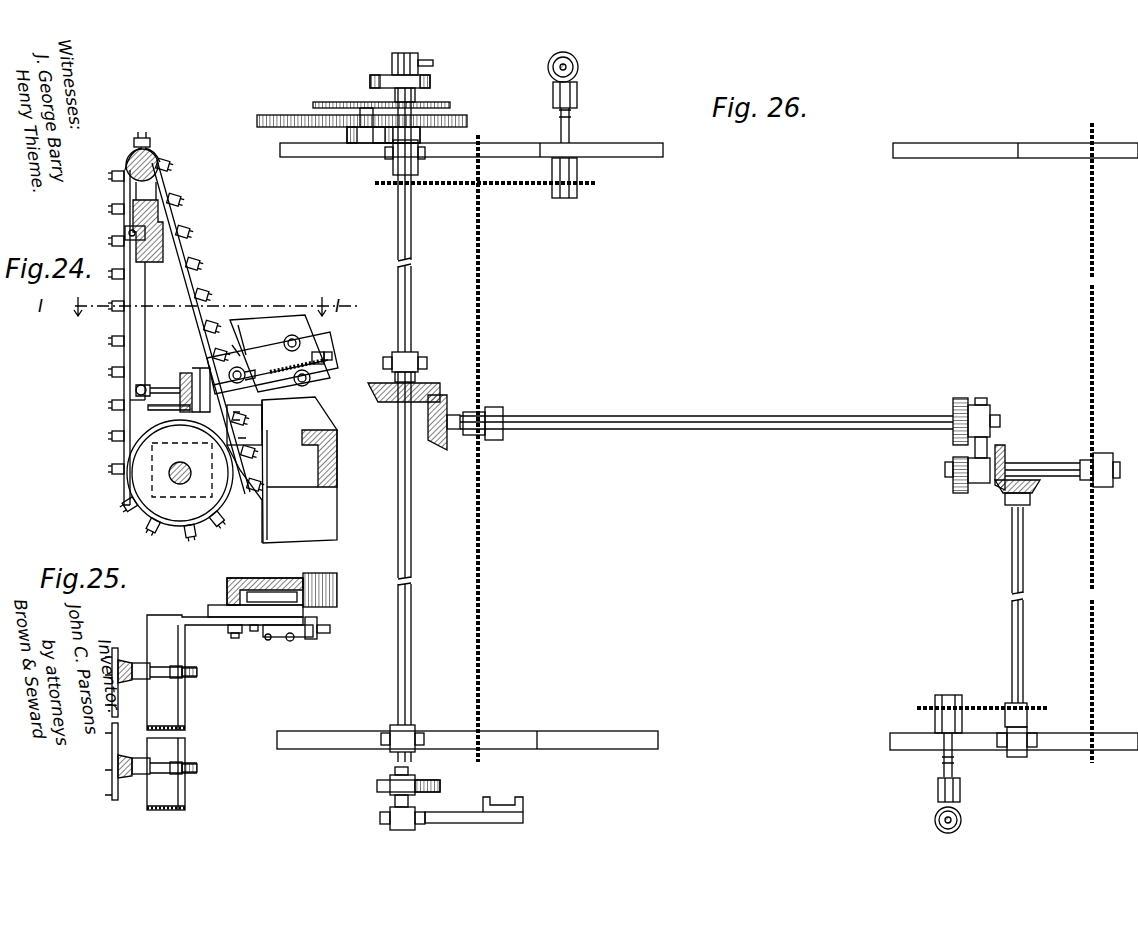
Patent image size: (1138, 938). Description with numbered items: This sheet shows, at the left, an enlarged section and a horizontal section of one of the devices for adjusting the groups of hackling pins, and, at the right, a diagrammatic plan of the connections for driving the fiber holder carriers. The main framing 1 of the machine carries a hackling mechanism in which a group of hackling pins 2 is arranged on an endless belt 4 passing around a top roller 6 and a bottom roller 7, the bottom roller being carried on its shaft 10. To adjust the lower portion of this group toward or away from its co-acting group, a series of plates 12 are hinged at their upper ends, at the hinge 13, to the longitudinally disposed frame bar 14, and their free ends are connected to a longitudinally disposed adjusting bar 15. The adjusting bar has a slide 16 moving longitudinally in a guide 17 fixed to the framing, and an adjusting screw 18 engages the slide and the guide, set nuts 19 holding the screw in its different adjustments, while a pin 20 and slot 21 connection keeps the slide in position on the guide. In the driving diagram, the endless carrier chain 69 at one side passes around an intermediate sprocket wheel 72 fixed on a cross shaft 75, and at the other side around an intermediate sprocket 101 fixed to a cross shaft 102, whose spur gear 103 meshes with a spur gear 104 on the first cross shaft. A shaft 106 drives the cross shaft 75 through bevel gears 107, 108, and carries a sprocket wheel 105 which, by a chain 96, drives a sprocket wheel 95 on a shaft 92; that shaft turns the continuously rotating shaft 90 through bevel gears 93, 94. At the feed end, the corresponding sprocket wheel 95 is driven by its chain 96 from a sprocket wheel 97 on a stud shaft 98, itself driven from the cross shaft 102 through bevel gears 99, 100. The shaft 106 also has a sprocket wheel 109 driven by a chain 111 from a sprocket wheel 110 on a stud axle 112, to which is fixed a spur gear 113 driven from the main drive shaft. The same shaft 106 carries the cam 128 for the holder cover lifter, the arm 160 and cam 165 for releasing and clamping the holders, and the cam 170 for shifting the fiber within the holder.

In FIG. 24, the main framing 1 is at (320, 512).
In FIG. 25, the main framing 1 is at (252, 580).
In FIG. 26, the main framing 1 is at (627, 157).
In FIG. 24, the group of hackling pins 2 is at (195, 233).
In FIG. 25, the group of hackling pins 2 is at (112, 660).
In FIG. 24, the endless belt 4 is at (180, 215).
In FIG. 25, the endless belt 4 is at (113, 710).
In FIG. 24, the top roller 6 is at (152, 153).
In FIG. 24, the bottom roller 7 is at (140, 465).
In FIG. 24, the shaft of bottom roller 10 is at (172, 477).
In FIG. 24, the plate 12 is at (137, 348).
In FIG. 24, the hinge 13 is at (125, 232).
In FIG. 24, the frame bar 14 is at (157, 262).
In FIG. 24, the adjusting bar 15 is at (182, 382).
In FIG. 25, the adjusting bar 15 is at (225, 712).
In FIG. 24, the slide 16 is at (205, 370).
In FIG. 25, the slide 16 is at (253, 632).
In FIG. 24, the guide 17 is at (232, 345).
In FIG. 25, the guide 17 is at (220, 607).
In FIG. 24, the adjusting screw 18 is at (332, 358).
In FIG. 25, the adjusting screw 18 is at (292, 640).
In FIG. 24, the set nuts 19 is at (300, 351).
In FIG. 25, the set nuts 19 is at (326, 635).
In FIG. 24, the pin 20 is at (245, 383).
In FIG. 25, the pin 20 is at (236, 638).
In FIG. 24, the slot 21 is at (275, 365).
In FIG. 26, the chain 69 is at (481, 510).
In FIG. 26, the intermediate sprocket wheel 72 is at (490, 407).
In FIG. 26, the cross shaft 75 is at (740, 430).
In FIG. 26, the continuously rotating shaft 90 is at (580, 78).
In FIG. 26, the shaft 92 is at (928, 768).
In FIG. 26, the bevel gear 93 is at (578, 88).
In FIG. 26, the bevel gear 94 is at (578, 66).
In FIG. 26, the sprocket wheel 95 is at (590, 185).
In FIG. 26, the chain 96 is at (517, 186).
In FIG. 26, the sprocket wheel 97 is at (1040, 706).
In FIG. 26, the stud shaft 98 is at (1012, 623).
In FIG. 26, the bevel gear 99 is at (1008, 496).
In FIG. 26, the bevel gear 100 is at (1003, 452).
In FIG. 26, the intermediate sprocket 101 is at (1090, 456).
In FIG. 26, the cross shaft 102 is at (1064, 476).
In FIG. 26, the spur gear 103 is at (960, 494).
In FIG. 26, the spur gear 104 is at (963, 400).
In FIG. 26, the sprocket wheel 105 is at (378, 186).
In FIG. 26, the shaft 106 is at (410, 315).
In FIG. 26, the bevel gear 107 is at (378, 403).
In FIG. 26, the bevel gear 108 is at (440, 450).
In FIG. 26, the sprocket wheel 109 is at (450, 106).
In FIG. 26, the sprocket wheel 110 is at (318, 104).
In FIG. 26, the chain 111 is at (378, 102).
In FIG. 26, the stud axle 112 is at (347, 133).
In FIG. 26, the spur gear 113 is at (257, 120).
In FIG. 26, the cam 128 is at (385, 788).
In FIG. 26, the arm 160 is at (433, 63).
In FIG. 26, the cam 165 is at (372, 78).
In FIG. 26, the cam 170 is at (370, 132).